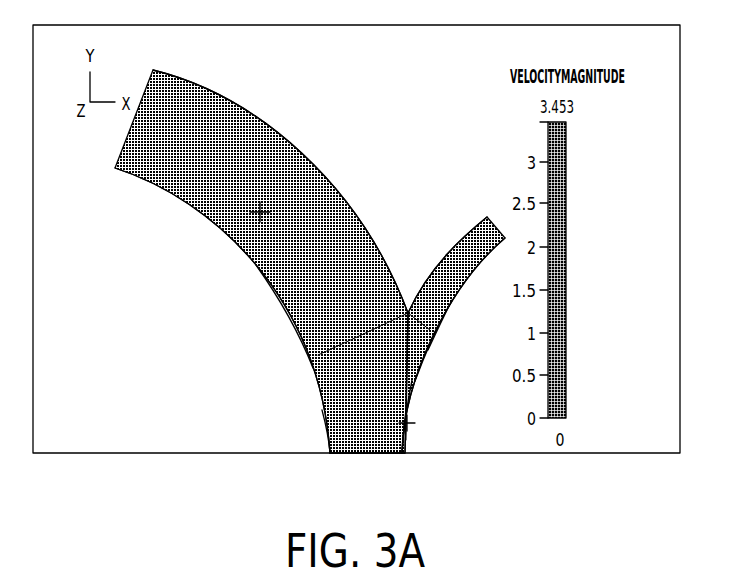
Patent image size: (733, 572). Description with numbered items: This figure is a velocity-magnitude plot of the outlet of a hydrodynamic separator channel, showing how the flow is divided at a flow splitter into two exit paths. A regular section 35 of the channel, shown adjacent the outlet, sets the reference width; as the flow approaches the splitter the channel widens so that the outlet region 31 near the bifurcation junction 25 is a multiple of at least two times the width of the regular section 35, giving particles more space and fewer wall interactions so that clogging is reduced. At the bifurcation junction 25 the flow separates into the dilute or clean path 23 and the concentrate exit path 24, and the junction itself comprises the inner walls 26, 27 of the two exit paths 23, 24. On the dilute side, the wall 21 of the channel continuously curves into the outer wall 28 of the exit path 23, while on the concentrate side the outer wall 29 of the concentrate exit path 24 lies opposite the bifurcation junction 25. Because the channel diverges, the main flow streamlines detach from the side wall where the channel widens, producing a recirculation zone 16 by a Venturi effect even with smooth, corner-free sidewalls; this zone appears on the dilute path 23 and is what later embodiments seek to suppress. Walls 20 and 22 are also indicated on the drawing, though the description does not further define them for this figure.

The recirculation zone 16 is at (307, 345).
The outlet passage wall 20 is at (452, 382).
The wall of the channel 21 is at (330, 442).
The outlet right corner 22 is at (405, 447).
The dilute or clean path 23 is at (276, 124).
The concentrate exit path 24 is at (456, 216).
The bifurcation junction 25 is at (403, 287).
The inner wall of the exit path 26 is at (320, 177).
The inner wall of the exit path 27 is at (447, 258).
The outer wall of the exit path 28 is at (261, 270).
The outer wall of the concentrate exit path 29 is at (461, 288).
The outlet region 31 is at (446, 336).
The regular section of the channel 35 is at (378, 466).